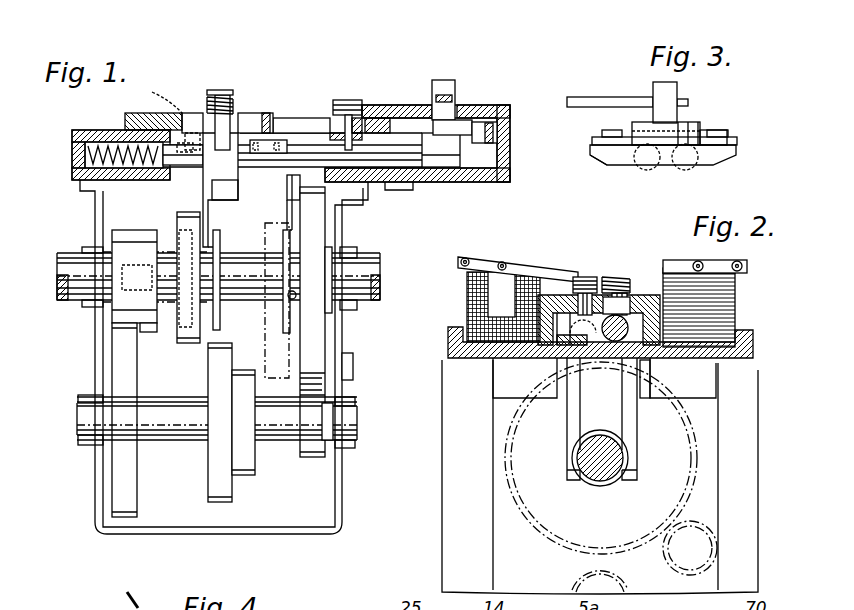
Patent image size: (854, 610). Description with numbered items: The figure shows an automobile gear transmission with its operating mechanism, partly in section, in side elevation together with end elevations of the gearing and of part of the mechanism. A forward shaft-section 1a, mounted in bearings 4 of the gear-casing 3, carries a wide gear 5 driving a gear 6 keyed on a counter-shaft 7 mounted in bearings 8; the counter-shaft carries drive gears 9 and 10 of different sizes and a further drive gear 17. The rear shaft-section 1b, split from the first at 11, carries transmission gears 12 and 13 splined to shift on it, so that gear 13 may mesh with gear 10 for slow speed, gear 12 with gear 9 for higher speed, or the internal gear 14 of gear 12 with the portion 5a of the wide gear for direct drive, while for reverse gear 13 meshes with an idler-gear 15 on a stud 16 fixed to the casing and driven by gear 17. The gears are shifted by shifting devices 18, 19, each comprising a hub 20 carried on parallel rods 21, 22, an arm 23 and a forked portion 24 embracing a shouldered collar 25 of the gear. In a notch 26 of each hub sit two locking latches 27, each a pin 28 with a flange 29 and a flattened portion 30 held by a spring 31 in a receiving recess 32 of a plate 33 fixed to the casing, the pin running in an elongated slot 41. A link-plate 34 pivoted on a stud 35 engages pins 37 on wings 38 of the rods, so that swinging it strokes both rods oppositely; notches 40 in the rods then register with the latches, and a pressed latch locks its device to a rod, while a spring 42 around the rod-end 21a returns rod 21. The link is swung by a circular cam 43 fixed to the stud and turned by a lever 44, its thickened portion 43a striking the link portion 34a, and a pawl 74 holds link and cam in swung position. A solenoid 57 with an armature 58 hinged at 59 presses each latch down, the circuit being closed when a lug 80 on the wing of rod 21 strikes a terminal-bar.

In FIG. 1, the shaft-section 1a is at (72, 266).
In FIG. 1, the rear shaft-section 1b is at (381, 277).
In FIG. 1, the gear-casing 3 is at (95, 350).
In FIG. 2, the gear-casing 3 is at (758, 450).
In FIG. 1, the bearings 4 is at (90, 248).
In FIG. 1, the wide gear 5 is at (125, 245).
In FIG. 1, the portion of wide gear 5a is at (146, 331).
In FIG. 1, the gear 6 is at (124, 420).
In FIG. 1, the counter-shaft 7 is at (175, 441).
In FIG. 1, the bearings 8 is at (90, 445).
In FIG. 1, the drive gear 9 is at (220, 422).
In FIG. 1, the drive gear 10 is at (244, 422).
In FIG. 1, the split 11 is at (140, 263).
In FIG. 1, the transmission gear 12 is at (187, 345).
In FIG. 1, the transmission gear 13 is at (262, 241).
In FIG. 2, the transmission gear 13 is at (549, 530).
In FIG. 1, the internal gear 14 is at (178, 330).
In FIG. 1, the intermediate idler-gear 15 is at (300, 388).
In FIG. 2, the intermediate idler-gear 15 is at (575, 590).
In FIG. 1, the stud 16 is at (331, 366).
In FIG. 1, the drive gear 17 is at (311, 443).
In FIG. 2, the drive gear 17 is at (665, 565).
In FIG. 1, the shifting device 18 is at (226, 191).
In FIG. 1, the shifting device 19 is at (287, 186).
In FIG. 1, the hub 20 is at (220, 190).
In FIG. 2, the hub 20 is at (690, 385).
In FIG. 1, the rod 21 is at (392, 140).
In FIG. 3, the rod 21 is at (645, 166).
In FIG. 2, the rod 21 is at (560, 362).
In FIG. 1, the rod-end 21a is at (126, 126).
In FIG. 3, the rod 22 is at (688, 166).
In FIG. 2, the rod 22 is at (642, 365).
In FIG. 1, the arm 23 is at (287, 221).
In FIG. 2, the arm 23 is at (631, 425).
In FIG. 1, the forked portion 24 is at (286, 283).
In FIG. 2, the forked portion 24 is at (567, 470).
In FIG. 1, the shouldered collar 25 is at (293, 300).
In FIG. 2, the shouldered collar 25 is at (601, 487).
In FIG. 1, the notch 26 is at (254, 140).
In FIG. 1, the locking latch 27 is at (232, 125).
In FIG. 1, the pin 28 is at (213, 123).
In FIG. 2, the pin 28 is at (631, 286).
In FIG. 1, the flange 29 is at (226, 100).
In FIG. 2, the flange 29 is at (585, 276).
In FIG. 1, the flattened portion 30 is at (193, 135).
In FIG. 2, the flattened portion 30 is at (618, 380).
In FIG. 1, the spring 31 is at (213, 92).
In FIG. 2, the spring 31 is at (586, 277).
In FIG. 1, the receiving recess 32 is at (180, 165).
In FIG. 1, the plate 33 is at (345, 100).
In FIG. 2, the plate 33 is at (668, 268).
In FIG. 1, the link-plate 34 is at (462, 140).
In FIG. 3, the link-plate 34 is at (593, 141).
In FIG. 2, the link-plate 34 is at (600, 342).
In FIG. 1, the portion of link 34a is at (467, 128).
In FIG. 3, the portion of link 34a is at (703, 131).
In FIG. 1, the stud 35 is at (455, 108).
In FIG. 3, the stud 35 is at (672, 92).
In FIG. 1, the pins 37 is at (462, 122).
In FIG. 3, the pins 37 is at (607, 133).
In FIG. 1, the wings 38 is at (452, 160).
In FIG. 3, the wings 38 is at (612, 161).
In FIG. 1, the notch 40 is at (300, 70).
In FIG. 2, the notch 40 is at (580, 358).
In FIG. 1, the elongated slot 41 is at (285, 118).
In FIG. 1, the spring 42 is at (90, 158).
In FIG. 1, the circular cam 43 is at (470, 128).
In FIG. 3, the circular cam 43 is at (686, 125).
In FIG. 1, the segmental thickened portion 43a is at (418, 127).
In FIG. 1, the lever 44 is at (445, 97).
In FIG. 3, the lever 44 is at (593, 104).
In FIG. 2, the solenoid 57 is at (478, 300).
In FIG. 2, the armature 58 is at (553, 268).
In FIG. 2, the hinge 59 is at (467, 260).
In FIG. 1, the pawl 74 is at (495, 136).
In FIG. 3, the lug 80 is at (600, 151).